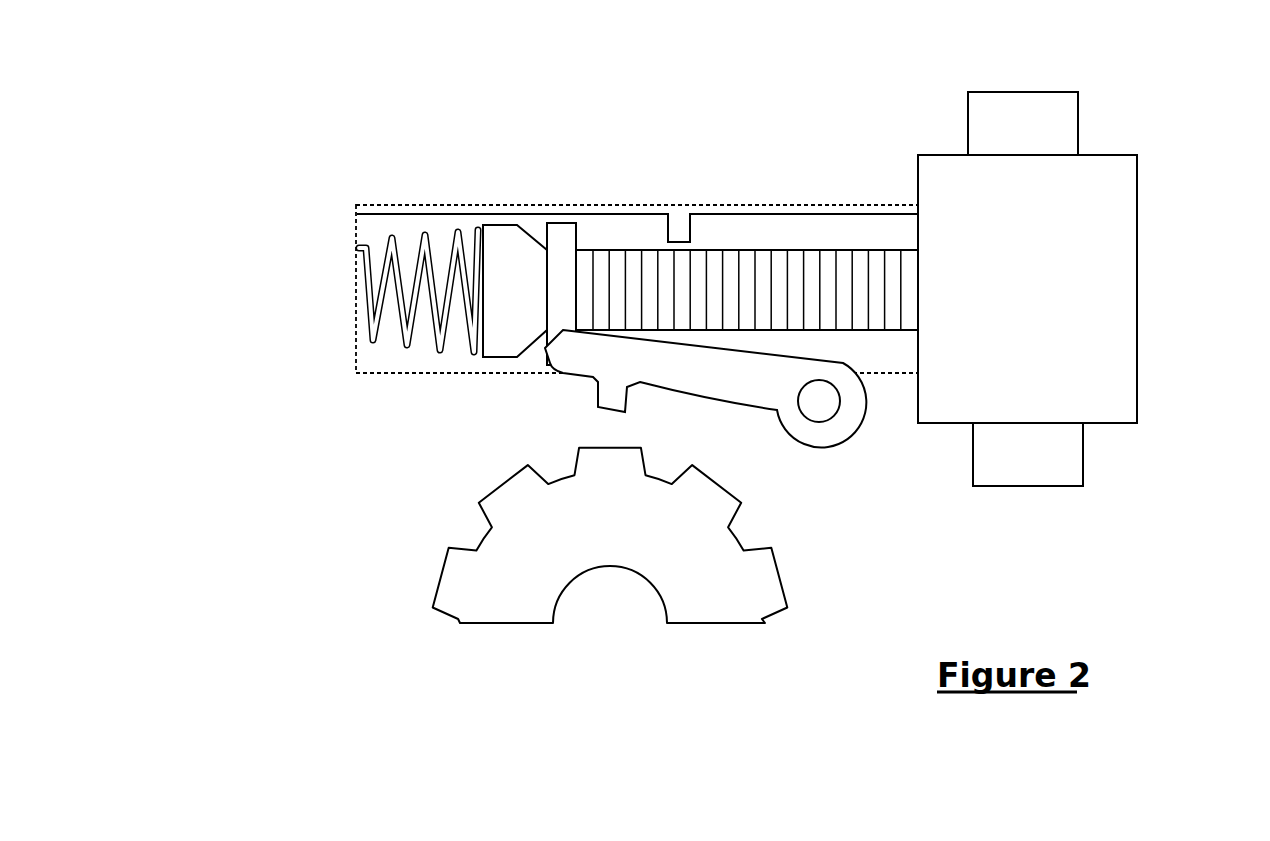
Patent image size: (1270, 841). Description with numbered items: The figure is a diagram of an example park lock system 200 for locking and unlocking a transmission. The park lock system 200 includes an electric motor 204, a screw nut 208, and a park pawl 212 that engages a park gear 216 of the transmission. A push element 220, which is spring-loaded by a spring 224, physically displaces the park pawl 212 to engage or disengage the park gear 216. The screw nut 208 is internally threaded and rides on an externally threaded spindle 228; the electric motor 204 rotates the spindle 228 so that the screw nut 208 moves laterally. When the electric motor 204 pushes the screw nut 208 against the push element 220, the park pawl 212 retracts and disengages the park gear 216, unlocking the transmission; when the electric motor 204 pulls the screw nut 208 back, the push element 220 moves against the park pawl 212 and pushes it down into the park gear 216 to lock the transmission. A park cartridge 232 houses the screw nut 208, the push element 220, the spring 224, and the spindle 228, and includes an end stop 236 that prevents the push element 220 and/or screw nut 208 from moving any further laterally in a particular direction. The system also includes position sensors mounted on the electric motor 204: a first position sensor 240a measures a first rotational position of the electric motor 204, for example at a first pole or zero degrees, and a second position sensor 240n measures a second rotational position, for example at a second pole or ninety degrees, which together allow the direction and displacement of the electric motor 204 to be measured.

The park lock system 200 is at (318, 96).
The electric motor 204 is at (1138, 287).
The screw nut 208 is at (556, 226).
The park pawl 212 is at (822, 448).
The park gear 216 is at (512, 623).
The push element 220 is at (527, 352).
The spring 224 is at (414, 352).
The spindle 228 is at (790, 250).
The park cartridge 232 is at (399, 205).
The end stop 236 is at (666, 230).
The first position sensor 240a is at (1024, 92).
The second position sensor 240n is at (1027, 486).